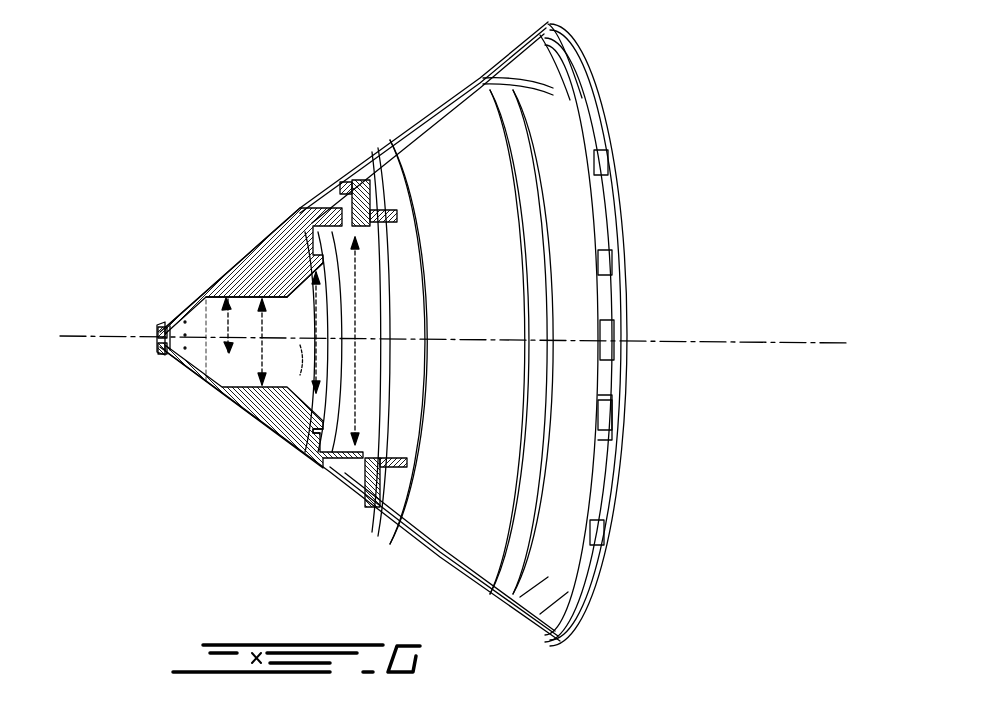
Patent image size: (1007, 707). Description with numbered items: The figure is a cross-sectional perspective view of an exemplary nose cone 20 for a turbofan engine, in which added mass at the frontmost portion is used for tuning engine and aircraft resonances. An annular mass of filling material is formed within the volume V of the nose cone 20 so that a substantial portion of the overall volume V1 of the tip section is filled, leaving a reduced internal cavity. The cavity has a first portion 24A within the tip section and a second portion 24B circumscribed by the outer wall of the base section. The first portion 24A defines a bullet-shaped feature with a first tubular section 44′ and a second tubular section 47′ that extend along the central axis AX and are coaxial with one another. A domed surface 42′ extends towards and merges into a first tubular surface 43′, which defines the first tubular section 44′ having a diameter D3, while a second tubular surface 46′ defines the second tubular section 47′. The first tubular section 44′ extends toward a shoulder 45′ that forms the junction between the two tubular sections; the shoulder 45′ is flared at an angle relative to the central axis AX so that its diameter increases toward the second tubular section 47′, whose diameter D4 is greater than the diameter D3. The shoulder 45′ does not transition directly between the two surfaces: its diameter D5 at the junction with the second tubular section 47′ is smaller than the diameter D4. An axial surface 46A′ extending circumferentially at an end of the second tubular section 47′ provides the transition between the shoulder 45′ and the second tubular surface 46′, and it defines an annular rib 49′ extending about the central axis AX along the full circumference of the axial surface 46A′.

The nose cone 20 is at (640, 91).
The first portion of the nose cone cavity 24A is at (215, 298).
The second portion of the nose cone cavity 24B is at (575, 254).
The domed surface 42′ is at (175, 312).
The first tubular surface 43′ is at (233, 268).
The first tubular section 44′ is at (235, 352).
The shoulder 45′ is at (299, 274).
The second tubular surface 46′ is at (340, 200).
The axial surface 46A′ is at (350, 412).
The second tubular section 47′ is at (340, 440).
The rib 49′ is at (323, 423).
The diameter of the first tubular section D3 is at (262, 298).
The diameter of the second tubular section D4 is at (355, 235).
The diameter of the shoulder D5 is at (320, 378).
The volume of the nose cone V is at (452, 518).
The overall volume of the tip section V1 is at (215, 343).
The central axis AX is at (834, 340).